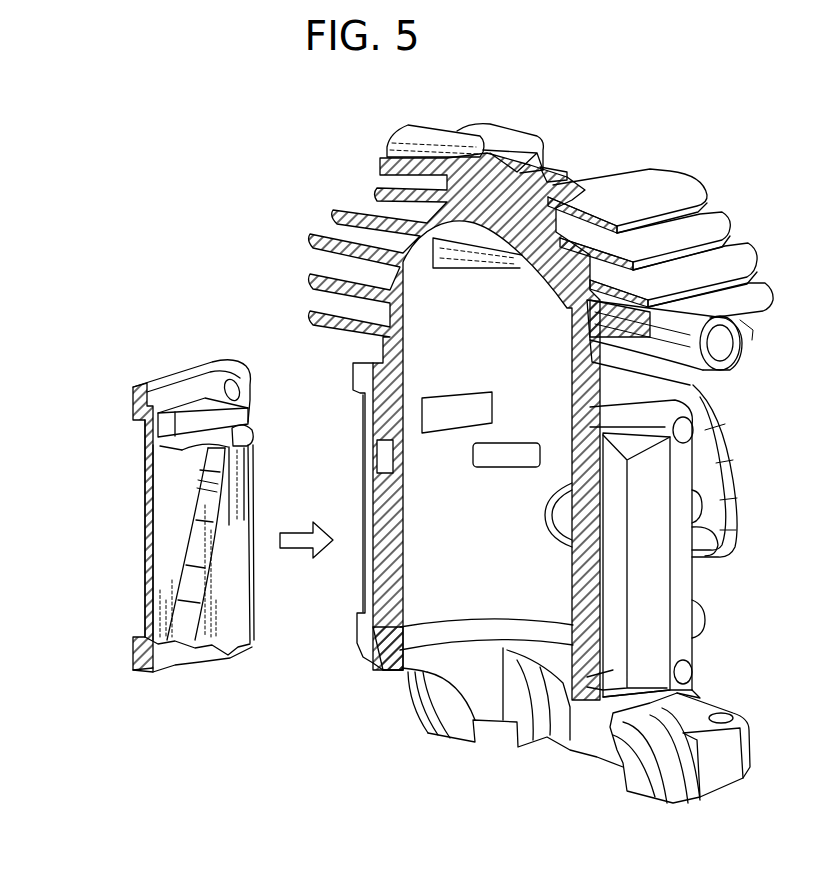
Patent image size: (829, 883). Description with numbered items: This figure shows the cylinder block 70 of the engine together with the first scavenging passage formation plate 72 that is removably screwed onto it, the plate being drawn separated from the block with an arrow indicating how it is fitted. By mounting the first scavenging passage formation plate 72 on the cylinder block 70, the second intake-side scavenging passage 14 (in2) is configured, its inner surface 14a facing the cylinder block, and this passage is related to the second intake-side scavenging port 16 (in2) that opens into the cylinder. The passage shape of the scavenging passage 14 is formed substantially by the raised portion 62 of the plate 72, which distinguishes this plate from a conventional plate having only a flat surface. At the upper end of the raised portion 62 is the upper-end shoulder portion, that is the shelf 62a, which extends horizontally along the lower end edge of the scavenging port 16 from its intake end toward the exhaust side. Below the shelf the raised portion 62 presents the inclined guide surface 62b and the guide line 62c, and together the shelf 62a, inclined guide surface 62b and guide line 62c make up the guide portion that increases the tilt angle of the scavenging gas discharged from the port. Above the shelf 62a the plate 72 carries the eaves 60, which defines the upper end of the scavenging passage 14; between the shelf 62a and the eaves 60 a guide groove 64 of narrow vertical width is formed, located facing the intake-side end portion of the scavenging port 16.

The scavenging passage 14 is at (175, 558).
The inner surface of second insert member 14a is at (205, 447).
The scavenging port 16 is at (524, 463).
The eaves 60 is at (205, 400).
The raised portion 62 is at (182, 495).
The shelf 62a is at (254, 436).
The inclined guide surface 62b is at (215, 486).
The guide line 62c is at (249, 463).
The guide groove 64 is at (160, 446).
The cylinder block 70 is at (390, 668).
The first scavenging passage formation plate 72 is at (158, 381).